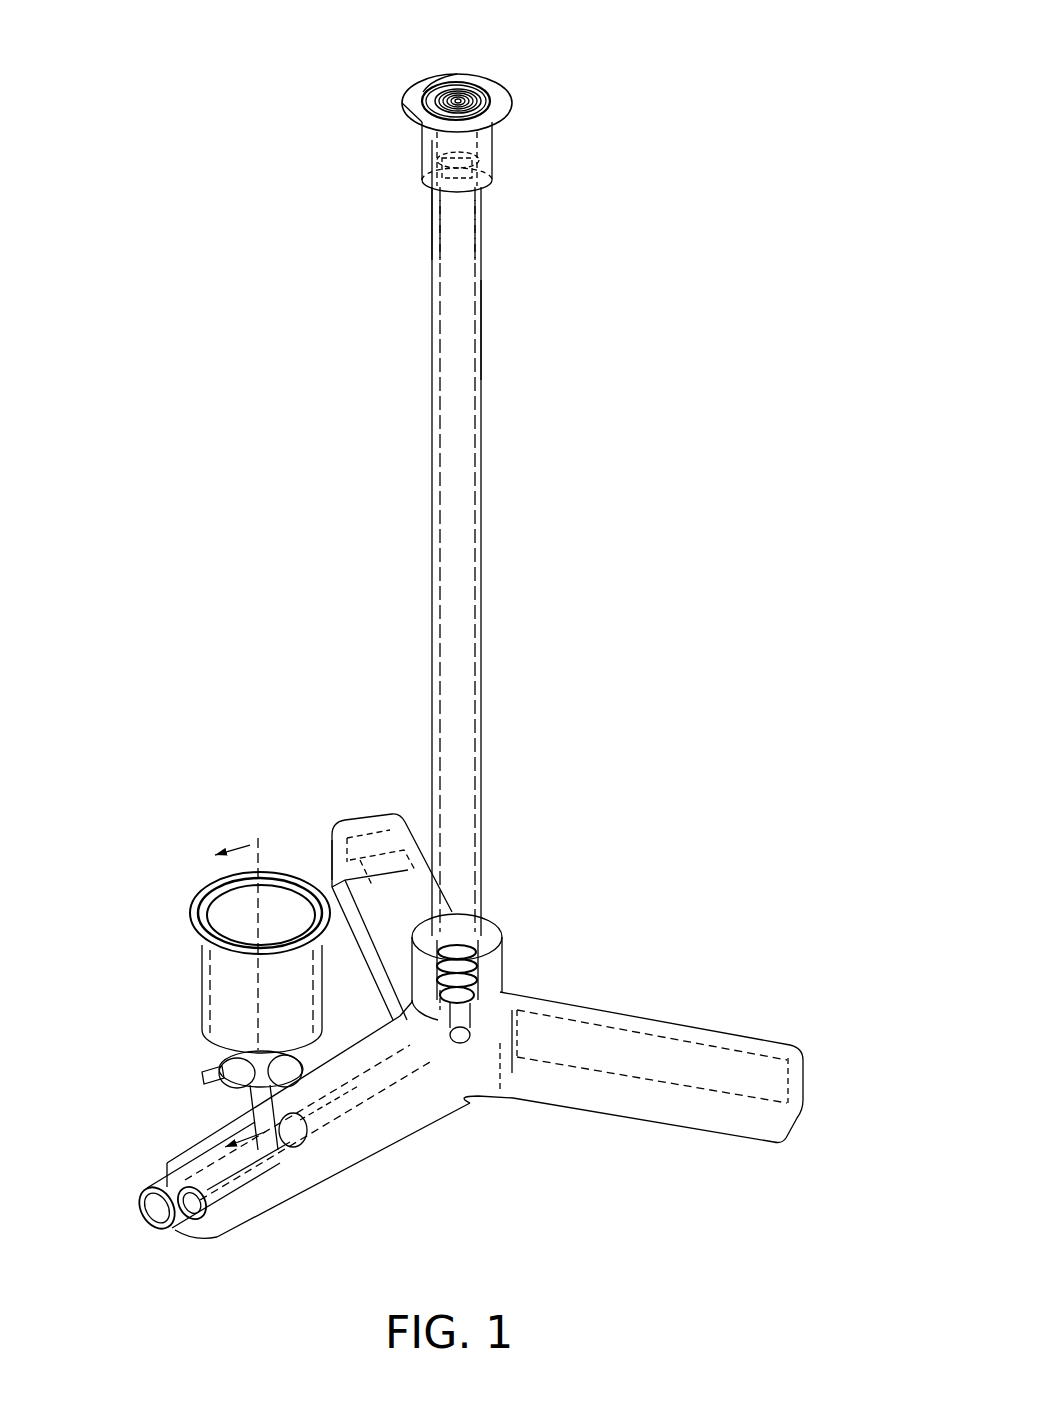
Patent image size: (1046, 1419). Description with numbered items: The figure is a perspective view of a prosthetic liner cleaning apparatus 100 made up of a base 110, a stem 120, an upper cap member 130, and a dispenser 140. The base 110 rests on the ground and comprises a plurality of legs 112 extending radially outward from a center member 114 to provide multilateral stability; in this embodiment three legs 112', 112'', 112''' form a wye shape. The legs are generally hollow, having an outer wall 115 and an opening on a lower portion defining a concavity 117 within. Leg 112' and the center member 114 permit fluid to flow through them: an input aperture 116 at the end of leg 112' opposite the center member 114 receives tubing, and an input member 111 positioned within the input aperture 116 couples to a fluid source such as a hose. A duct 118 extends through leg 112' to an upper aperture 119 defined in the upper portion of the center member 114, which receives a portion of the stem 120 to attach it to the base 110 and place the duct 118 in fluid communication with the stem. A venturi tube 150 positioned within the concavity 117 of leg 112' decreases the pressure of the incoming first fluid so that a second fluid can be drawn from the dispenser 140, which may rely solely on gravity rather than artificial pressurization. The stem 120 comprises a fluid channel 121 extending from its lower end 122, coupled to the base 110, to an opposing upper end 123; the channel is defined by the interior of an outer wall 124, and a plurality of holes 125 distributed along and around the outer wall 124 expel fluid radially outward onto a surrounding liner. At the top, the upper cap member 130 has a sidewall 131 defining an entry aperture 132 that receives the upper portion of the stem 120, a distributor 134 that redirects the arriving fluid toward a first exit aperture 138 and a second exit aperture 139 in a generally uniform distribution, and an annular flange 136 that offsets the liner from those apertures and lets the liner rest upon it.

The cleaning apparatus 100 is at (155, 170).
The base 110 is at (480, 1073).
The input member 111 is at (150, 1207).
The plurality of legs 112 is at (526, 991).
The leg 112' is at (318, 1141).
The leg 112'' is at (692, 1069).
The leg 112''' is at (392, 867).
The center member 114 is at (483, 933).
The outer wall 115 is at (338, 842).
The input aperture 116 is at (192, 1213).
The concavity 117 is at (373, 853).
The duct 118 is at (457, 1040).
The upper aperture 119 is at (458, 930).
The stem 120 is at (481, 480).
The fluid channel 121 is at (458, 583).
The lower end 122 is at (437, 993).
The upper end 123 is at (433, 153).
The outer wall 124 is at (481, 325).
The plurality of holes 125 is at (472, 217).
The upper cap member 130 is at (498, 95).
The sidewall 131 is at (493, 163).
The entry aperture 132 is at (460, 175).
The distributor 134 is at (483, 98).
The flange 136 is at (427, 102).
The first exit aperture 138 is at (423, 100).
The second exit aperture 139 is at (413, 132).
The dispenser 140 is at (220, 988).
The venturi tube 150 is at (170, 1163).